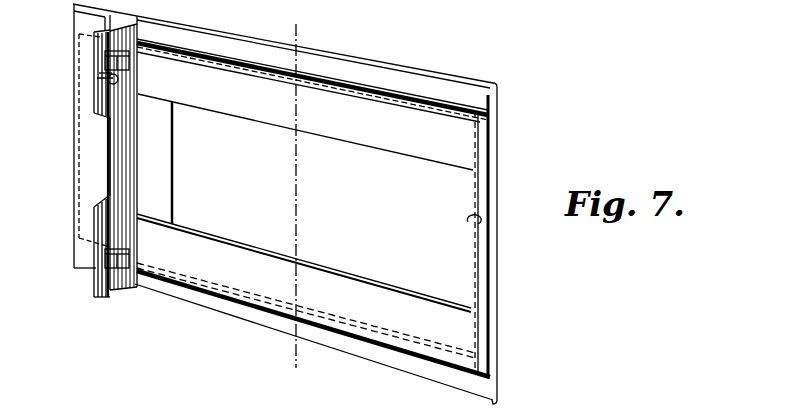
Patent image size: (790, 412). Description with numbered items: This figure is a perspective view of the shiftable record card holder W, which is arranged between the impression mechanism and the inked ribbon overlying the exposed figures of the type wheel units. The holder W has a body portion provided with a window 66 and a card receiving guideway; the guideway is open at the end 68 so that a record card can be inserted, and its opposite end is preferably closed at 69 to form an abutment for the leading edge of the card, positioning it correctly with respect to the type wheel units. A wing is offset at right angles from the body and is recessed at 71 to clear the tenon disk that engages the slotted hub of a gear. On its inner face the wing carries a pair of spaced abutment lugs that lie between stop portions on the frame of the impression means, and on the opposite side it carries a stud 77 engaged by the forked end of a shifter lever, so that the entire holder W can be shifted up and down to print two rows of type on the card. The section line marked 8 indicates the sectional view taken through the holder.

The window 66 is at (389, 147).
The open end 68 is at (77, 138).
The closed end 69 is at (319, 209).
The recess 71 is at (110, 169).
The stud 77 is at (95, 78).
The record card holder W is at (450, 90).
The section line 8- 8 is at (286, 31).